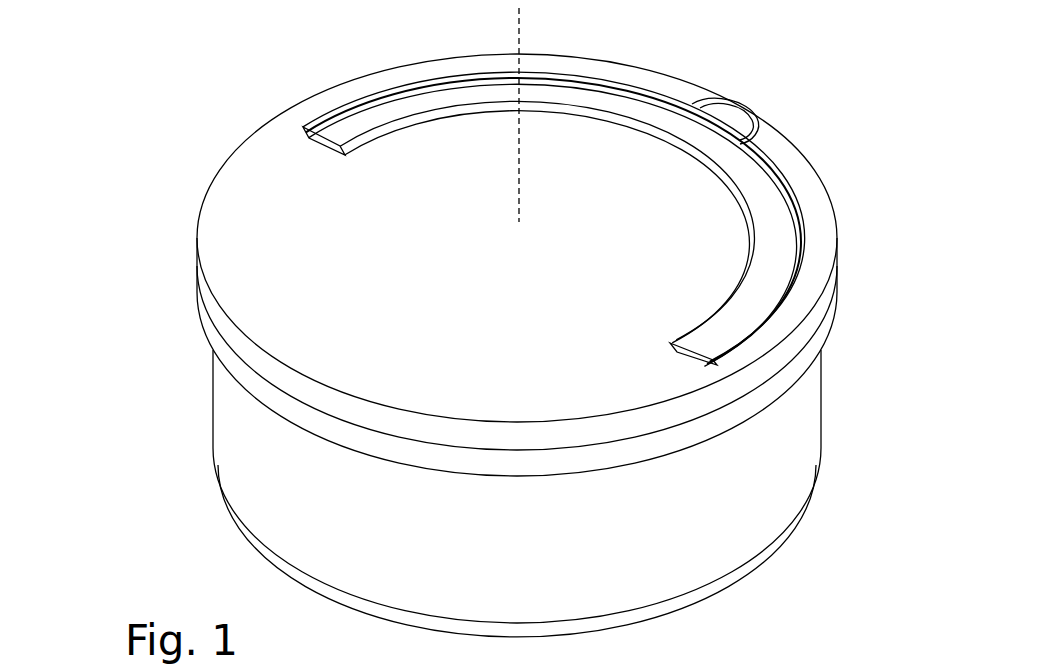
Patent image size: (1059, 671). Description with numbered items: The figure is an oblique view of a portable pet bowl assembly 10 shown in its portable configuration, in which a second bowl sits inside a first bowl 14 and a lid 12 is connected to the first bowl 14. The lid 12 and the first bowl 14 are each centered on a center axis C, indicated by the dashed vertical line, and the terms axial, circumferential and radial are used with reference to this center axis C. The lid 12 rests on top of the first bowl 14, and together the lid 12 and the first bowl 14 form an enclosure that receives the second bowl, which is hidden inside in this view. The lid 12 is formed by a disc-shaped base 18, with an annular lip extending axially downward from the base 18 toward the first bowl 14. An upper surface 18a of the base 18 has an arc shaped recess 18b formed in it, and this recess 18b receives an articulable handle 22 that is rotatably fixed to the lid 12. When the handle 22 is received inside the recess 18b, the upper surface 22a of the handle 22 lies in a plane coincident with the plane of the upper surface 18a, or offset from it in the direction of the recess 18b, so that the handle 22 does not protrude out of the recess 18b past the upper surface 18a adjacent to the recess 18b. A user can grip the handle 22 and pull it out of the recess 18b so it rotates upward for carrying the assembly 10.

The pet bowl assembly 10 is at (135, 107).
The lid 12 is at (207, 234).
The first bowl 14 is at (222, 442).
The base 18 is at (272, 282).
The upper surface 18a is at (711, 260).
The arc shaped recess 18b is at (818, 212).
The articulable handle 22 is at (722, 128).
The upper surface of handle 22a is at (775, 222).
The center axis C is at (520, 40).